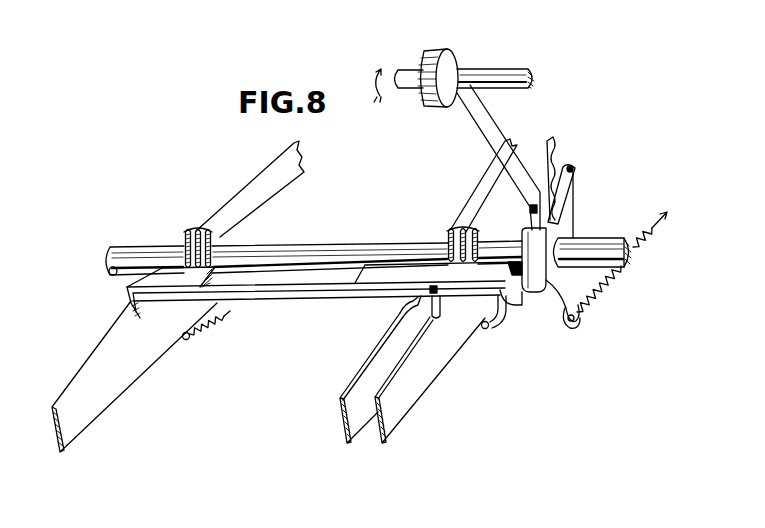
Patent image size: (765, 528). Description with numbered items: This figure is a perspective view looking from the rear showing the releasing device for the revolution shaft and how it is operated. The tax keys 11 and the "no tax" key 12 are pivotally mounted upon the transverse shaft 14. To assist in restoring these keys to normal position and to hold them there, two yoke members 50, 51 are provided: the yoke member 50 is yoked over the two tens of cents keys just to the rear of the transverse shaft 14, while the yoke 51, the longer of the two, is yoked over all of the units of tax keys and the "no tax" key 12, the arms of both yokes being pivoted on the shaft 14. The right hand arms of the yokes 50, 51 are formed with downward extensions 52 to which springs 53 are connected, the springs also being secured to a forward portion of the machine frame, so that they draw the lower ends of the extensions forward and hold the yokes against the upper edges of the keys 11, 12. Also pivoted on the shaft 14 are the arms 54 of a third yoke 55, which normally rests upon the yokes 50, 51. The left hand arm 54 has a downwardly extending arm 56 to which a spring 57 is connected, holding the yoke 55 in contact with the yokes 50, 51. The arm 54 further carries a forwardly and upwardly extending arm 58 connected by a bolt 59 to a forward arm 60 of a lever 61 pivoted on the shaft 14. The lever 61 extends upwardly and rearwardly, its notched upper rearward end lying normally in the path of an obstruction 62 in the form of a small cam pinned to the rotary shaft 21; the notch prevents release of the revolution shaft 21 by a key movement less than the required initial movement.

The tax keys 11 is at (378, 437).
The "no tax" key 12 is at (142, 367).
The transverse shaft 14 is at (594, 248).
The rotary shaft 21 is at (510, 73).
The yoke member 50 is at (470, 290).
The yoke member 51 is at (310, 289).
The downward extensions 52 is at (187, 341).
The springs 53 is at (221, 321).
The arms 54 is at (185, 245).
The third yoke 55 is at (393, 273).
The downwardly extending arm 56 is at (566, 328).
The spring 57 is at (607, 285).
The forwardly and upwardly extending arm 58 is at (563, 160).
The bolt 59 is at (575, 167).
The forward arm 60 is at (569, 195).
The lever 61 is at (483, 118).
The obstruction 62 is at (430, 61).